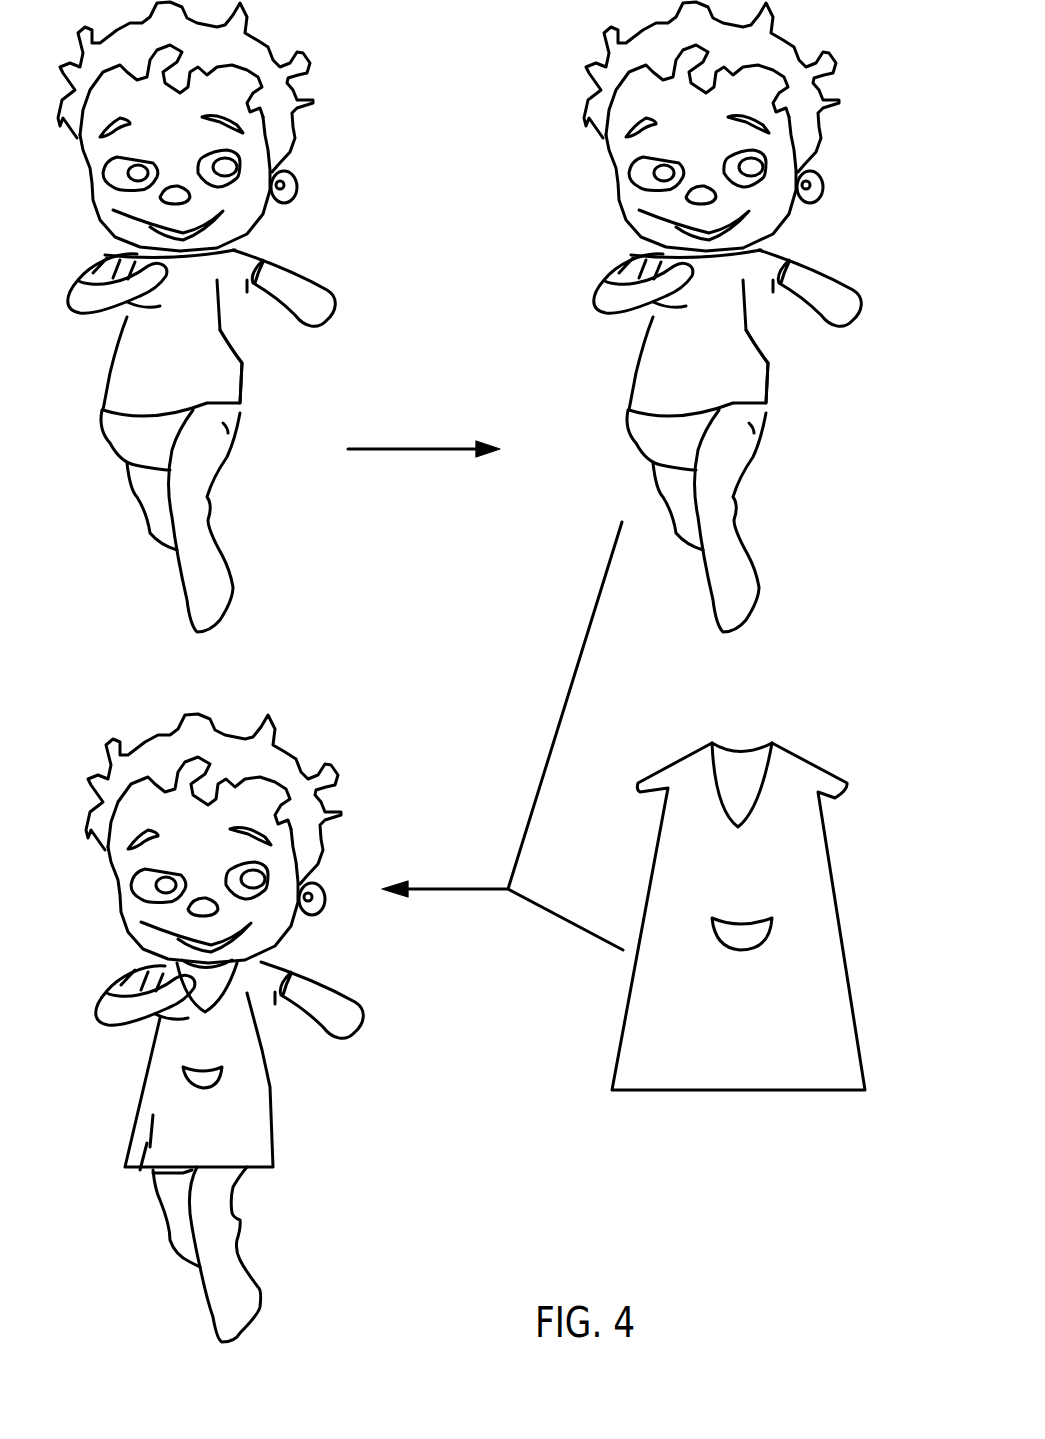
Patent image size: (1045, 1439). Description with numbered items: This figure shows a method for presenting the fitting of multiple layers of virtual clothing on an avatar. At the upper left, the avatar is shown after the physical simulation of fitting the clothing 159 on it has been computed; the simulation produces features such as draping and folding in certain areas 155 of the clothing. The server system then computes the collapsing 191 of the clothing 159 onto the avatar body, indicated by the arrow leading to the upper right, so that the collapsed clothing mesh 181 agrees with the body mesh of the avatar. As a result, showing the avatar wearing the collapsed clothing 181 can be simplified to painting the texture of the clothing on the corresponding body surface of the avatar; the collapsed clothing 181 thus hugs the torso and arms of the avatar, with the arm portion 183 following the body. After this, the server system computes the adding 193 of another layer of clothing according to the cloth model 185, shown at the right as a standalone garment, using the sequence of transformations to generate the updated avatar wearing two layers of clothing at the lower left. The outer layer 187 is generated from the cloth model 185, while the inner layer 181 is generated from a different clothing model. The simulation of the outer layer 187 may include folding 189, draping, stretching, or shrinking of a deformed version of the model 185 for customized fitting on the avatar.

The draping or folding area 155 is at (248, 285).
The clothing 159 is at (242, 363).
The collapsed clothing mesh 181 is at (768, 363).
The collapsed avatar arm 183 is at (774, 285).
The cloth model 185 is at (853, 1000).
The outer layer 187 is at (270, 1077).
The folding 189 is at (130, 1140).
The collapsing 191 is at (408, 449).
The adding 193 is at (445, 889).